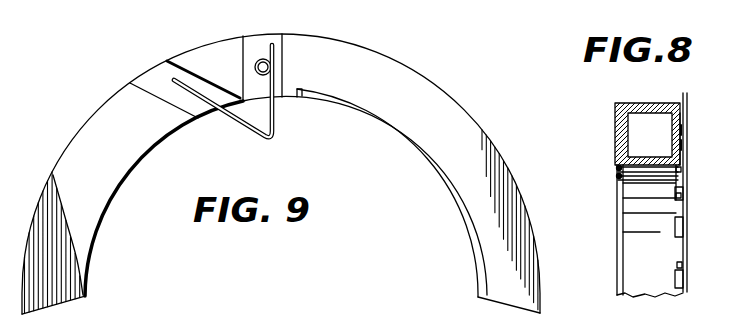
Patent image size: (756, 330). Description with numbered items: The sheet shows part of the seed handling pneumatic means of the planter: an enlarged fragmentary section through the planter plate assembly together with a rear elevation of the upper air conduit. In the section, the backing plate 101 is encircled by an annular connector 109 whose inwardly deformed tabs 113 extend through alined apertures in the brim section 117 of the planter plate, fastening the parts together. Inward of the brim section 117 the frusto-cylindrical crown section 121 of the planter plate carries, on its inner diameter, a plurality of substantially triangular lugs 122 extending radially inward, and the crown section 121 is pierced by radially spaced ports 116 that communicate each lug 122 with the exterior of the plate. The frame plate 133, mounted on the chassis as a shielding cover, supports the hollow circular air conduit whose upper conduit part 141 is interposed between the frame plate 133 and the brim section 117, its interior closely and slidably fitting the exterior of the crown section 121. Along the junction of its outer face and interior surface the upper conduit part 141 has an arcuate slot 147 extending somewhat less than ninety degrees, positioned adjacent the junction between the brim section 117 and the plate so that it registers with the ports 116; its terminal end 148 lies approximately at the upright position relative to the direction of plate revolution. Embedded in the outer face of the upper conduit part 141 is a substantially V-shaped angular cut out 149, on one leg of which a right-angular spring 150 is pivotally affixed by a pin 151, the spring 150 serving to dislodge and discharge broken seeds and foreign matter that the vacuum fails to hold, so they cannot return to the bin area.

In FIG. 8, the backing plate 101 is at (685, 148).
In FIG. 8, the annular connector 109 is at (688, 97).
In FIG. 8, the inwardly deformed tabs 113 is at (685, 130).
In FIG. 8, the ports 116 is at (685, 170).
In FIG. 8, the brim section 117 is at (680, 118).
In FIG. 8, the crown section 121 is at (618, 178).
In FIG. 8, the lugs 122 is at (678, 188).
In FIG. 8, the frame plate 133 is at (615, 125).
In FIG. 9, the upper conduit part 141 is at (388, 58).
In FIG. 8, the upper conduit part 141 is at (637, 102).
In FIG. 9, the arcuate slot 147 is at (365, 110).
In FIG. 8, the arcuate slot 147 is at (687, 160).
In FIG. 9, the terminal end 148 is at (301, 97).
In FIG. 9, the angular cut out 149 is at (248, 43).
In FIG. 9, the spring 150 is at (247, 126).
In FIG. 9, the pin 151 is at (255, 67).